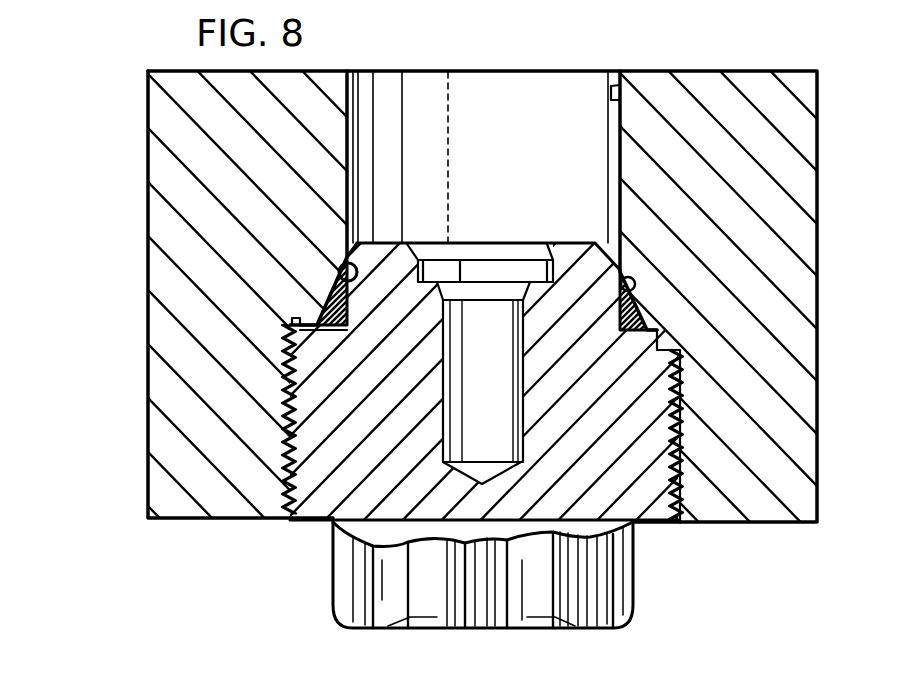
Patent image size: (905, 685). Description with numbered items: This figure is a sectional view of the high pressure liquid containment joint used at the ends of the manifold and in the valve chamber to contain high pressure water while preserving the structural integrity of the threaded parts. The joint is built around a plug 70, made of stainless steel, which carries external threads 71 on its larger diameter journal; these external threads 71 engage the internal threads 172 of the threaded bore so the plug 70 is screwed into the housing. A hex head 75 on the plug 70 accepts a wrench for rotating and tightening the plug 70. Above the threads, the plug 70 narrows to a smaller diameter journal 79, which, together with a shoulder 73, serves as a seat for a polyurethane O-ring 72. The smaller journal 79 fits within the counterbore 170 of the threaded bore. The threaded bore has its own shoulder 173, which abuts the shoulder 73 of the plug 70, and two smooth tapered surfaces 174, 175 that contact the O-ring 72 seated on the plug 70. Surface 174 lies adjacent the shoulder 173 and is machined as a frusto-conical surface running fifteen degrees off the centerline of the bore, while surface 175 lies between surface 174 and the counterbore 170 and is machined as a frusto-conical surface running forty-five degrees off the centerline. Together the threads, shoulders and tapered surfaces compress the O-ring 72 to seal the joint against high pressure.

The plug 70 is at (390, 243).
The external threads 71 is at (288, 492).
The O-ring 72 is at (337, 333).
The shoulder 73 is at (300, 327).
The hex head 75 is at (492, 621).
The smaller diameter journal 79 is at (355, 242).
The counterbore 170 is at (612, 93).
The internal threads 172 is at (287, 436).
The shoulder 173 is at (677, 348).
The smooth tapered surface 174 is at (322, 303).
The smooth tapered surface 175 is at (338, 271).